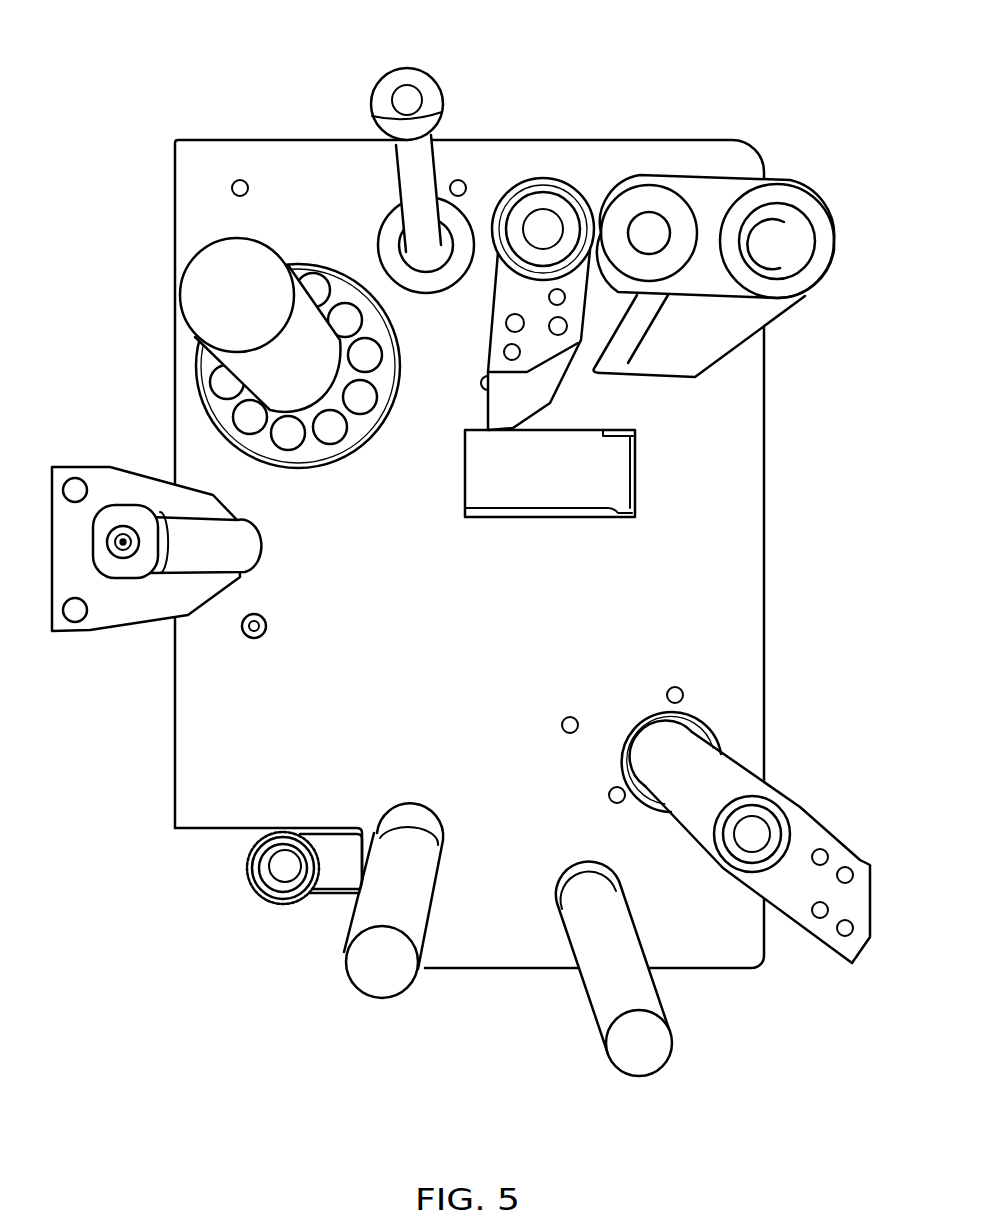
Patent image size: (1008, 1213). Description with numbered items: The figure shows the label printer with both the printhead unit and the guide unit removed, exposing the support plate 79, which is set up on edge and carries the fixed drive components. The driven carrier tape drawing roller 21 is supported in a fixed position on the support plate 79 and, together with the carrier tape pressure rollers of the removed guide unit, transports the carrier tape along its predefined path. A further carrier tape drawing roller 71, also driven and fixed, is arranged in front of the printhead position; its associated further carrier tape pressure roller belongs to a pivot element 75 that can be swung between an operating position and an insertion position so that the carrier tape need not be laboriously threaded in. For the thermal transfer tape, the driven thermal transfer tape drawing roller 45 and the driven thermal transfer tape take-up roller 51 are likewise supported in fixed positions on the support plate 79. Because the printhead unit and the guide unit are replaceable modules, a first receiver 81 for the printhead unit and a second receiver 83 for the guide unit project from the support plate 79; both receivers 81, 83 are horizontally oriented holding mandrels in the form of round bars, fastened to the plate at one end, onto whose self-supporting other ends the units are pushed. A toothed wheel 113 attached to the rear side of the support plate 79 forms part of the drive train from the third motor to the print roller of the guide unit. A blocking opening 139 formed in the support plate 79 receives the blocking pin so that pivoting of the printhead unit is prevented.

The carrier tape drawing roller 21 is at (713, 778).
The thermal transfer tape drawing roller 45 is at (188, 537).
The thermal transfer tape take-up roller 51 is at (213, 265).
The further carrier tape drawing roller 71 is at (545, 225).
The pivot element 75 is at (713, 168).
The support plate 79 is at (733, 560).
The first receiver 81 is at (370, 968).
The second receiver 83 is at (654, 1049).
The toothed wheel 113 is at (250, 872).
The blocking opening 139 is at (245, 637).